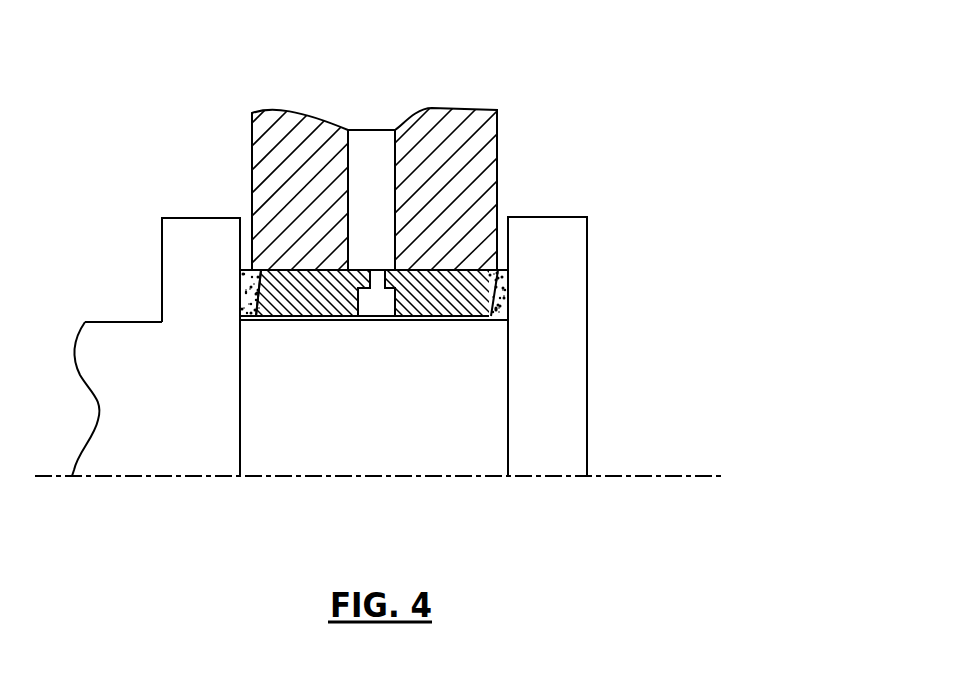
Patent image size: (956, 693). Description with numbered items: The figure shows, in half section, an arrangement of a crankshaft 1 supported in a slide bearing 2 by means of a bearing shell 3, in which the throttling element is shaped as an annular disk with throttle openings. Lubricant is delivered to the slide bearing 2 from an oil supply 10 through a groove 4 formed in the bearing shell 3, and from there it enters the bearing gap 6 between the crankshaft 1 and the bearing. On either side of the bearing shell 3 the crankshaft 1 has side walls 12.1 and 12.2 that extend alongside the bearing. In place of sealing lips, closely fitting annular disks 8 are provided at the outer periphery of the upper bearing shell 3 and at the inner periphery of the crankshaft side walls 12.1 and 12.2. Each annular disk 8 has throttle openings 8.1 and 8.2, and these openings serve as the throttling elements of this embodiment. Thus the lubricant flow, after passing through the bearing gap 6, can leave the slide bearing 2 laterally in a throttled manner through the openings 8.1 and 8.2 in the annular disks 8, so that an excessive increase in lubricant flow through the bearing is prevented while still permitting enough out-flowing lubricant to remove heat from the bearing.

The crankshaft 1 is at (392, 456).
The slide bearing 2 is at (447, 140).
The bearing shell 3 is at (347, 295).
The groove 4 is at (370, 308).
The bearing gap 6 is at (422, 317).
The annular disk 8 is at (240, 295).
The throttle opening 8.1 is at (243, 277).
The throttle opening 8.2 is at (508, 295).
The oil supply 10 is at (371, 173).
The side wall 12.1 is at (178, 277).
The side wall 12.2 is at (566, 238).